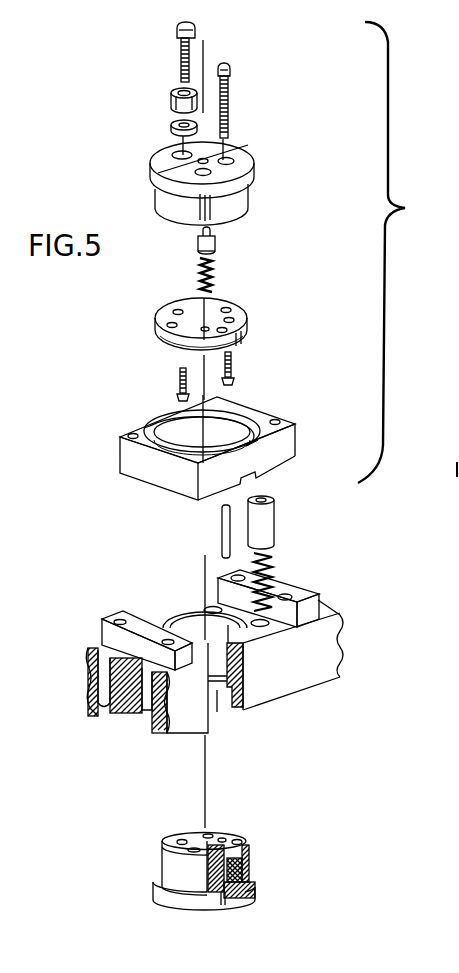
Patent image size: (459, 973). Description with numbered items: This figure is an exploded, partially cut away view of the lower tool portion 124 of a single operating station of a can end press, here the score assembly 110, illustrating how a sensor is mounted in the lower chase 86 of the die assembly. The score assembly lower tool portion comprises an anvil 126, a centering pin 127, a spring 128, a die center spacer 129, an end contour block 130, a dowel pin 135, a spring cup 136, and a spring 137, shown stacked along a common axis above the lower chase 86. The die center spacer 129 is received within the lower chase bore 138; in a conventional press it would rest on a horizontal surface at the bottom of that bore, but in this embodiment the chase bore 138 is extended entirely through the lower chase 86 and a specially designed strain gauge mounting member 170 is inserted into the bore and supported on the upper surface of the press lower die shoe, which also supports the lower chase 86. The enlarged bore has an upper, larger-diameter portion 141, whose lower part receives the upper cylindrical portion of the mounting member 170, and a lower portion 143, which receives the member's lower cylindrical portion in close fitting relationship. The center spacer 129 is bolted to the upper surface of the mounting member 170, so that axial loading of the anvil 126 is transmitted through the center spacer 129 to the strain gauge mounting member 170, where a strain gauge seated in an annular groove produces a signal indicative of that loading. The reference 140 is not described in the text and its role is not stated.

The score assembly 110 is at (116, 80).
The lower tool portion 124 is at (408, 252).
The anvil 126 is at (250, 148).
The centering pin 127 is at (216, 244).
The spring 128 is at (197, 269).
The die center spacer 129 is at (165, 318).
The disc body 140 is at (170, 340).
The end contour block 130 is at (137, 456).
The dowel pin 135 is at (220, 512).
The spring cup 136 is at (272, 517).
The spring 137 is at (274, 581).
The lower chase bore 138 is at (203, 623).
The chase bore upper portion 141 is at (185, 630).
The lower chase 86 is at (270, 687).
The chase bore lower portion 143 is at (218, 697).
The strain gauge mounting member 170 is at (262, 828).